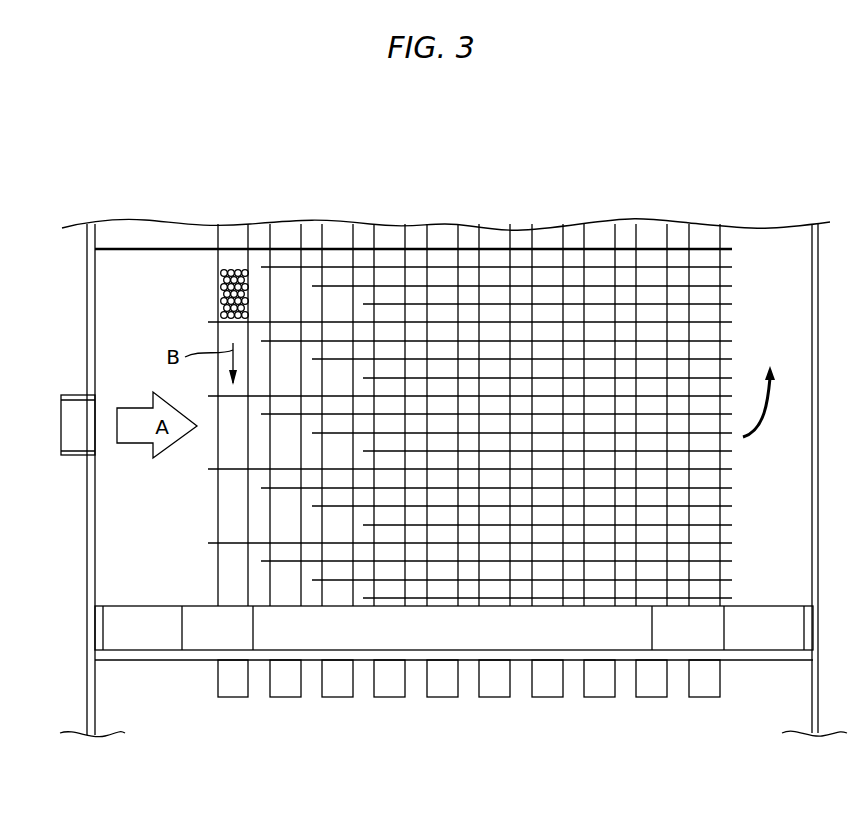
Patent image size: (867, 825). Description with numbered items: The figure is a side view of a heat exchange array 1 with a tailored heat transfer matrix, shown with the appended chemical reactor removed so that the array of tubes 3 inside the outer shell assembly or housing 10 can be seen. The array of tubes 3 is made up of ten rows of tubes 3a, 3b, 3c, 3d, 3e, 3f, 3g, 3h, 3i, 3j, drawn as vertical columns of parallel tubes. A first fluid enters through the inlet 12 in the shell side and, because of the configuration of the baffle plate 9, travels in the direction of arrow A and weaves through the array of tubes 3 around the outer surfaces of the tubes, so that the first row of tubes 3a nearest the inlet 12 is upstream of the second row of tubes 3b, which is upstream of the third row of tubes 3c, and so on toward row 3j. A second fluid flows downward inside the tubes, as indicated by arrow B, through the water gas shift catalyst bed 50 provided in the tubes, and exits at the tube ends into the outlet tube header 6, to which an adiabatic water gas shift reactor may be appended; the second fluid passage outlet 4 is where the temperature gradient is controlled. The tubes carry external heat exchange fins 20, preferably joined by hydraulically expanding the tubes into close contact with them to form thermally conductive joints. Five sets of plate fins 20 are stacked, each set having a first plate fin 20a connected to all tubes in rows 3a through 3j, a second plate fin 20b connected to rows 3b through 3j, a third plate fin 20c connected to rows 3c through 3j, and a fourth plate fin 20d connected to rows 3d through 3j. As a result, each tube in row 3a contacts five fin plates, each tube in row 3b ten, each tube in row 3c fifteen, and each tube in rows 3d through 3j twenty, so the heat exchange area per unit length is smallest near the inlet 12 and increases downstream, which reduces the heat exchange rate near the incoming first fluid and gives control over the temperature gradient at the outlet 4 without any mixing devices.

The heat exchange array 1 is at (146, 200).
The array of conduits 3 is at (456, 379).
The first row of tubes 3a is at (233, 232).
The second row of tubes 3b is at (288, 237).
The third row of tubes 3c is at (340, 238).
The fourth row of tubes 3d is at (393, 232).
The fifth row of tubes 3e is at (445, 233).
The sixth row of tubes 3f is at (493, 237).
The seventh row of tubes 3g is at (545, 237).
The eighth row of tubes 3h is at (600, 232).
The ninth row of tubes 3i is at (655, 235).
The tenth row of tubes 3j is at (706, 232).
The second fluid passage outlet 4 is at (233, 697).
The outlet tube header 6 is at (113, 633).
The baffle plate 9 is at (159, 252).
The outer shell assembly or housing 10 is at (92, 557).
The inlet 12 is at (95, 437).
The external heat exchange fins 20 is at (507, 423).
The first plate fin 20a is at (732, 304).
The second plate fin 20b is at (735, 340).
The third plate fin 20c is at (733, 360).
The fourth plate fin 20d is at (730, 378).
The water gas shift catalyst bed 50 is at (212, 299).